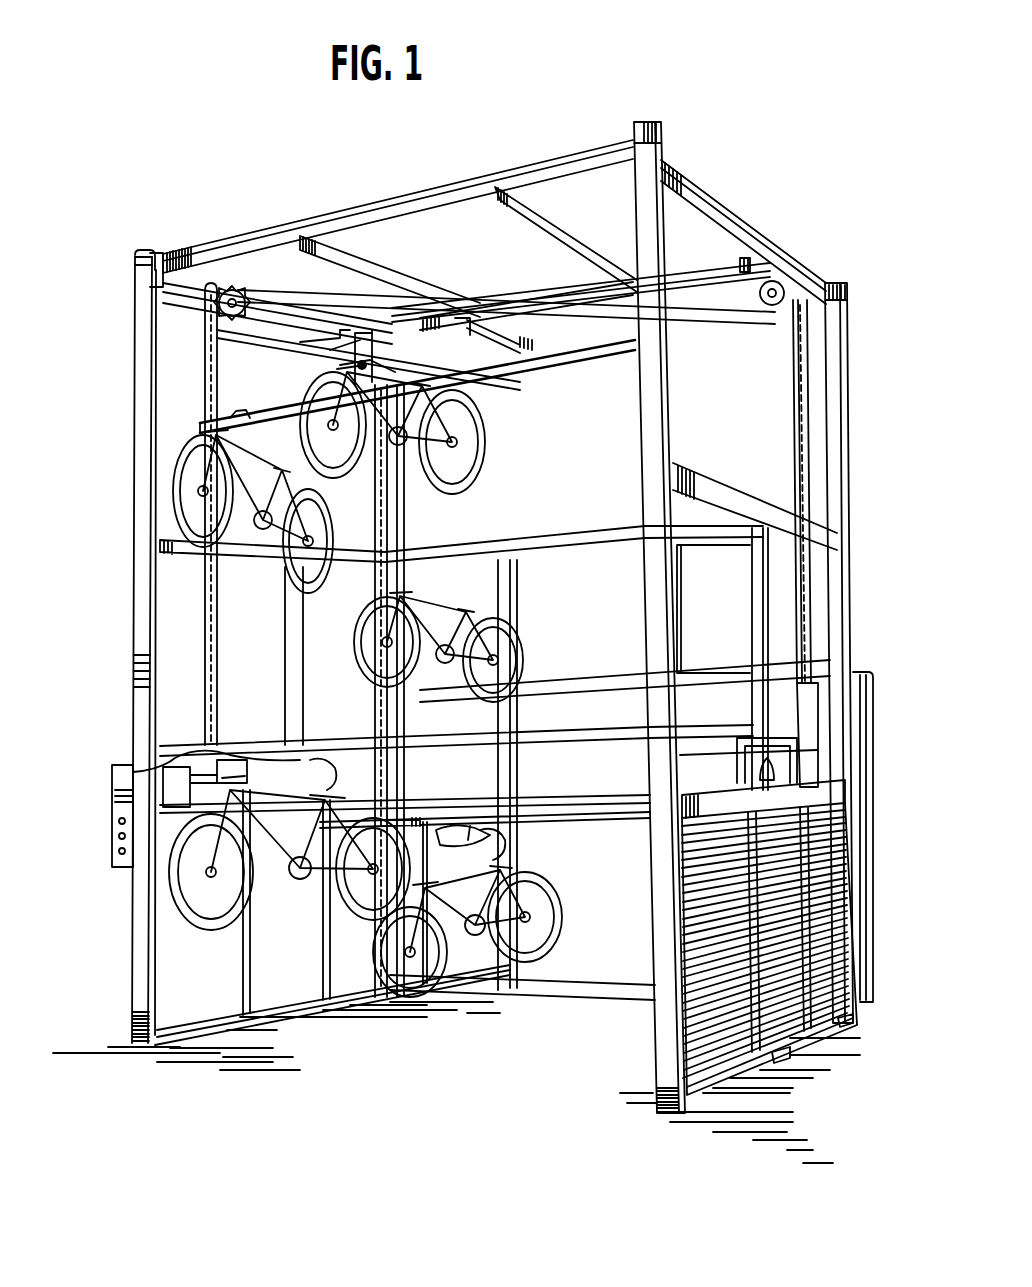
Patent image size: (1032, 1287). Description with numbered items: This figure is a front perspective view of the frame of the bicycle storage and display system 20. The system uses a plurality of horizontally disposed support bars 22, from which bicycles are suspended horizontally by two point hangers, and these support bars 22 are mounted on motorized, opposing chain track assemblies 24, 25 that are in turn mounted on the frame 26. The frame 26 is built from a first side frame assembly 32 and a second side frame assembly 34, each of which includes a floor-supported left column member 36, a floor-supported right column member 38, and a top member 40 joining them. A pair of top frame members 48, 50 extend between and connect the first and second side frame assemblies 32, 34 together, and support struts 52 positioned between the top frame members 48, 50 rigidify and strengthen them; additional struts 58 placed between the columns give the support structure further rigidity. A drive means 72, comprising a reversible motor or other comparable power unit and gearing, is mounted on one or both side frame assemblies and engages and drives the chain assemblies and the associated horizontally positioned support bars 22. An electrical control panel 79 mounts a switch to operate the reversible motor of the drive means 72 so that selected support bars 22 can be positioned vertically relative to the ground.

The bicycle storage and display system 20 is at (712, 156).
The support bar 22 is at (275, 380).
The chain track assembly 24 is at (206, 600).
The chain track assembly 25 is at (806, 460).
The frame 26 is at (155, 286).
The first side frame assembly 32 is at (146, 663).
The second side frame assembly 34 is at (843, 833).
The left column member 36 is at (145, 445).
The right column member 38 is at (845, 393).
The top member 40 is at (273, 330).
The top frame member 48 is at (210, 240).
The top frame member 50 is at (735, 300).
The support strut 52 is at (303, 308).
The strut 58 is at (770, 645).
The drive means 72 is at (183, 740).
The electrical control panel 79 is at (112, 843).